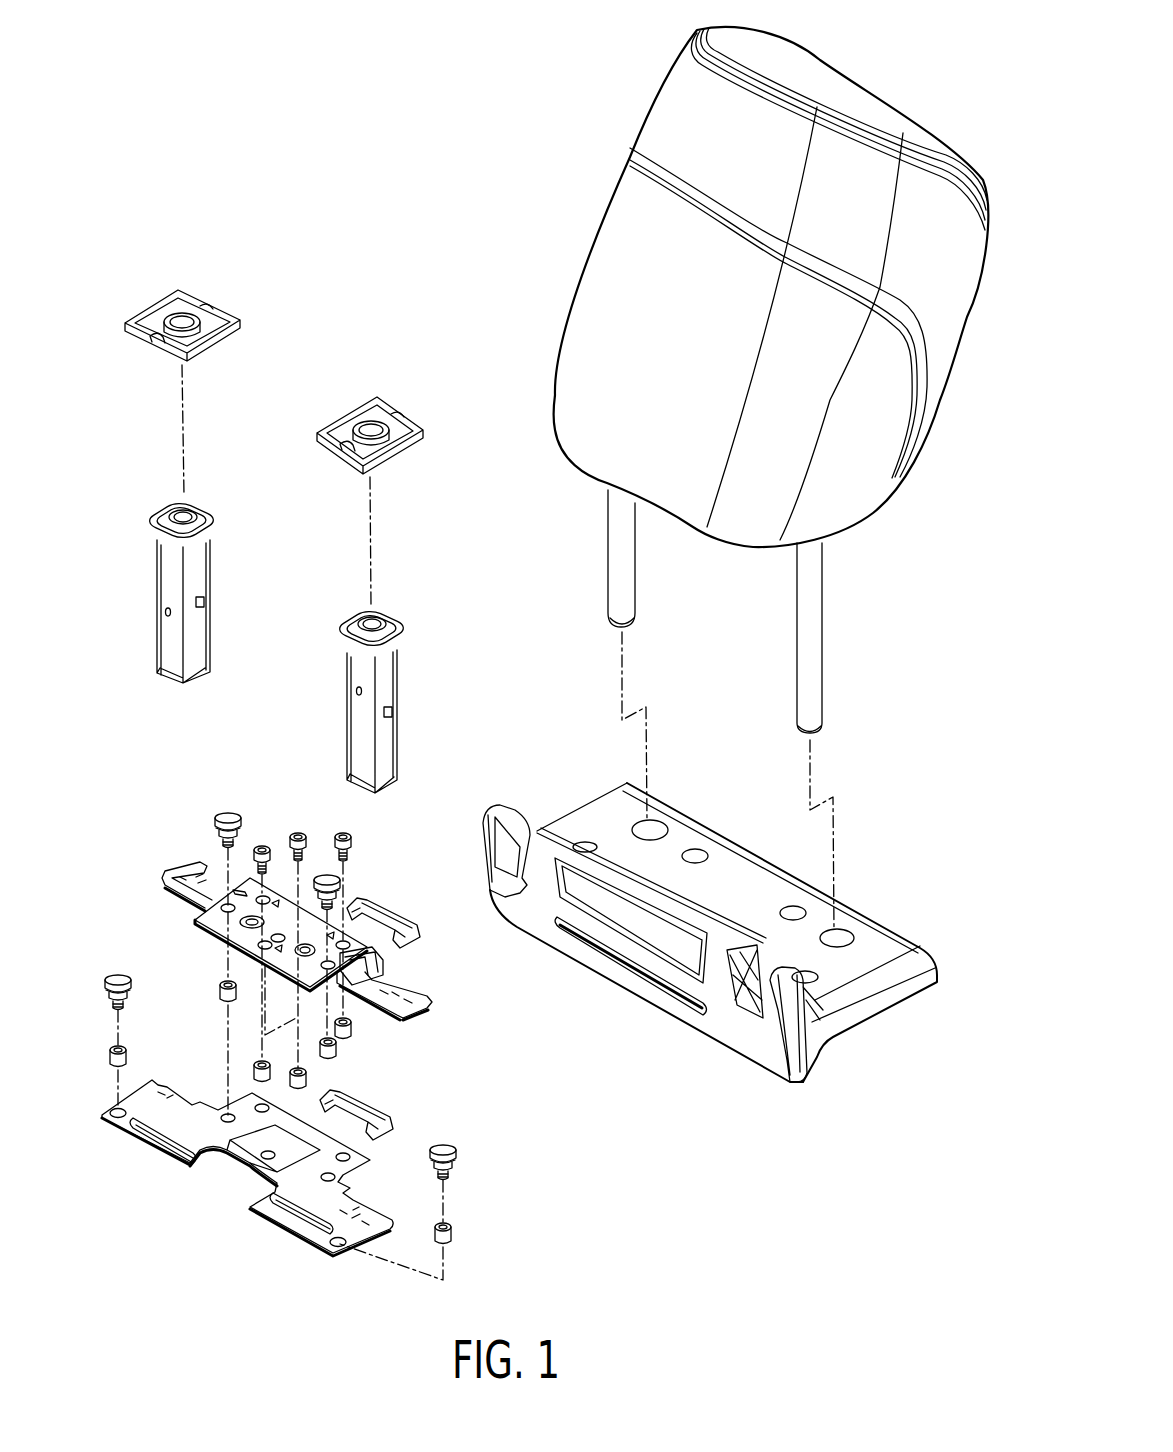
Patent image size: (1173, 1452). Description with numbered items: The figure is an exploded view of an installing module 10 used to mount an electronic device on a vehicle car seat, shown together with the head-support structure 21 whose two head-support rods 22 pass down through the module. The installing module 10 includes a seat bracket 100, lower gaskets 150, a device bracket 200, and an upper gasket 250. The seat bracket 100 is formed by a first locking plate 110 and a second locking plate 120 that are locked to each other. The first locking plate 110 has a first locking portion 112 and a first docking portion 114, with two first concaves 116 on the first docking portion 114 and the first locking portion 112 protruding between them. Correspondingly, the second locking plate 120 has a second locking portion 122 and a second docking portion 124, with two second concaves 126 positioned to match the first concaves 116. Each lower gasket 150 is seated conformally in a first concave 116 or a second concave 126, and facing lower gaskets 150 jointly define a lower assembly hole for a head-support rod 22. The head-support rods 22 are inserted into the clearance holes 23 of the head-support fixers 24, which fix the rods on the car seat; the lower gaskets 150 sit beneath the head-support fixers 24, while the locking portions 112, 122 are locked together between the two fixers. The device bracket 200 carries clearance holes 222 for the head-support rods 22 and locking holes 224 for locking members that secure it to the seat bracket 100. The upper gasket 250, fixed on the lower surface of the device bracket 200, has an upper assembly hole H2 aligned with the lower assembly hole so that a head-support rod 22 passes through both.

The installing module 10 is at (572, 1172).
The head-support structure 21 is at (668, 105).
The head-support rod 22 is at (627, 563).
The clearance hole 23 is at (195, 508).
The head-support fixer 24 is at (309, 626).
The upper gasket 250 is at (287, 421).
The upper assembly hole H2 is at (178, 312).
The device bracket 200 is at (725, 924).
The clearance hole 222 is at (653, 823).
The locking hole 224 is at (697, 855).
The seat bracket 100 is at (276, 1060).
The first locking plate 110 is at (308, 930).
The first locking portion 112 is at (217, 923).
The first docking portion 114 is at (308, 930).
The first concave 116 is at (373, 997).
The lower gasket 150 is at (408, 915).
The second locking plate 120 is at (266, 1165).
The second locking portion 122 is at (298, 1128).
The second docking portion 124 is at (140, 1095).
The second concave 126 is at (360, 1211).